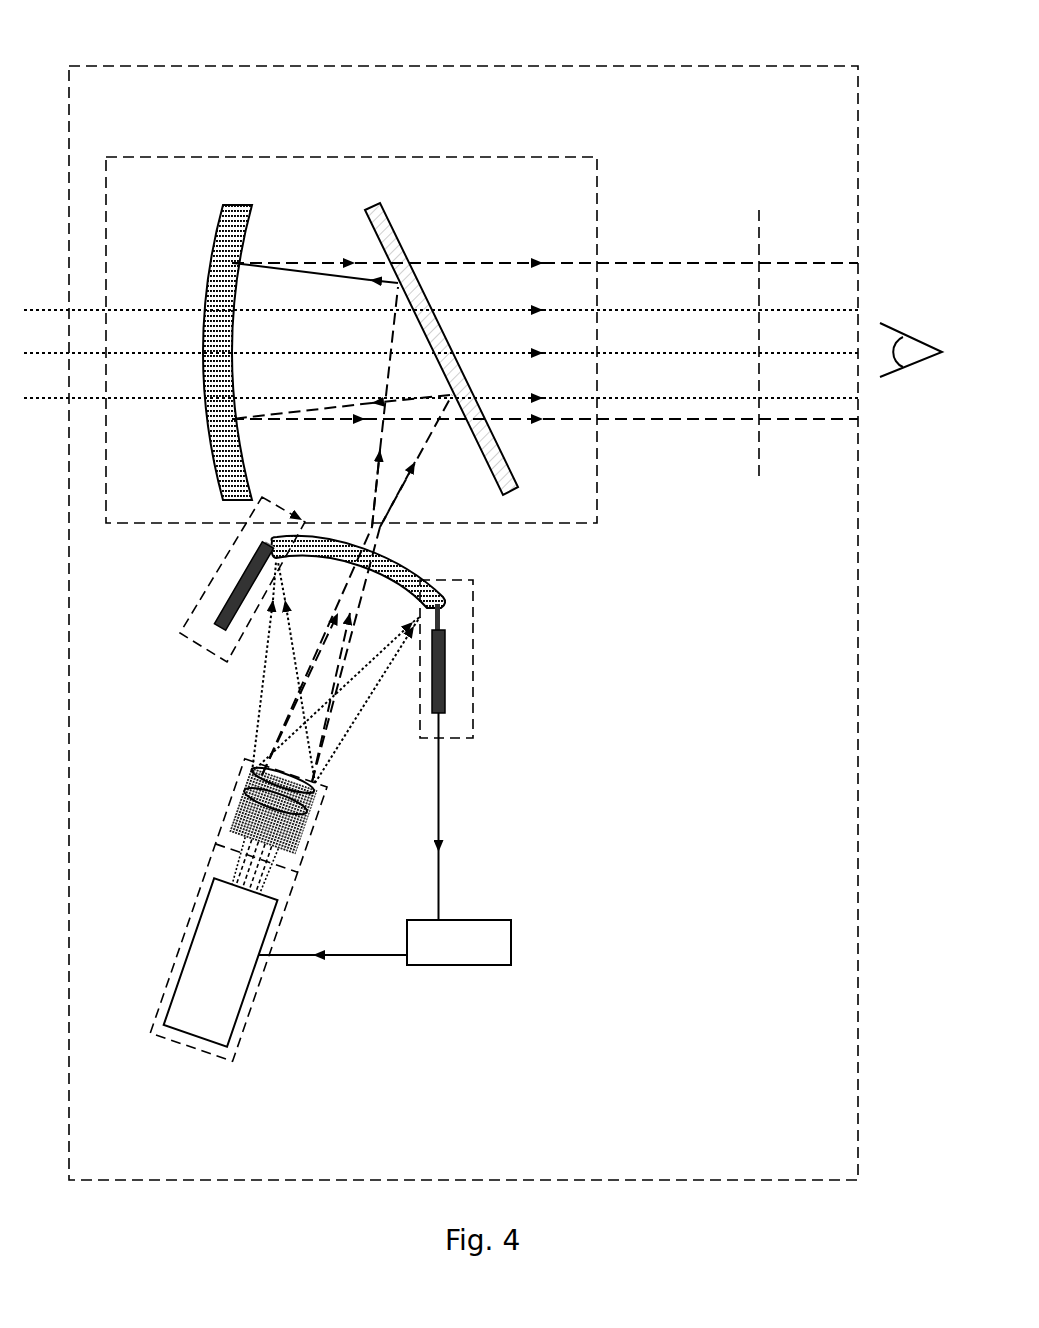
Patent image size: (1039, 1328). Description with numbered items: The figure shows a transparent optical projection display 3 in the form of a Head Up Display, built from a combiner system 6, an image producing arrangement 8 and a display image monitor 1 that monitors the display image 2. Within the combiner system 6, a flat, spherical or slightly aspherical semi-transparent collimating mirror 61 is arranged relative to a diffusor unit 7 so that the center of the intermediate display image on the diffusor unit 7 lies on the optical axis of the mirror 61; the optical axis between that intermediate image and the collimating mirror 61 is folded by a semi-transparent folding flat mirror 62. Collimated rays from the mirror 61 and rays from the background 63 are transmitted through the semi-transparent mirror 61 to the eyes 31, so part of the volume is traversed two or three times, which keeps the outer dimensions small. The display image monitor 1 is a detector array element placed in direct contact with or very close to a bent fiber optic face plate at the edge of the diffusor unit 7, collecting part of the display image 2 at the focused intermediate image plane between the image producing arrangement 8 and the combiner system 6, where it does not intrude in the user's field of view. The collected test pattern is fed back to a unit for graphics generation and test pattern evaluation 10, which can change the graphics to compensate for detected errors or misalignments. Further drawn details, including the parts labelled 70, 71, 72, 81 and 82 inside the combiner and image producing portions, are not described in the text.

The display image monitor 1 is at (463, 590).
The combiner system 6 is at (351, 296).
The semi-transparent mirror 61 is at (196, 332).
The semi-transparent folding flat mirror 62 is at (397, 338).
The background 63 is at (441, 315).
The transparent optical projection display 3 is at (804, 351).
The eyes 31 is at (899, 323).
The curved combiner waveguide 70 is at (381, 572).
The input coupler 71 is at (486, 603).
The light sensor 72 is at (485, 671).
The diffusor unit 7 is at (492, 659).
The mirror tip coupling 81 is at (206, 561).
The folding mirror 82 is at (199, 586).
The image producing arrangement 8 is at (196, 586).
The display image 2 is at (215, 910).
The unit for graphics generation and test pattern evaluation 10 is at (385, 839).